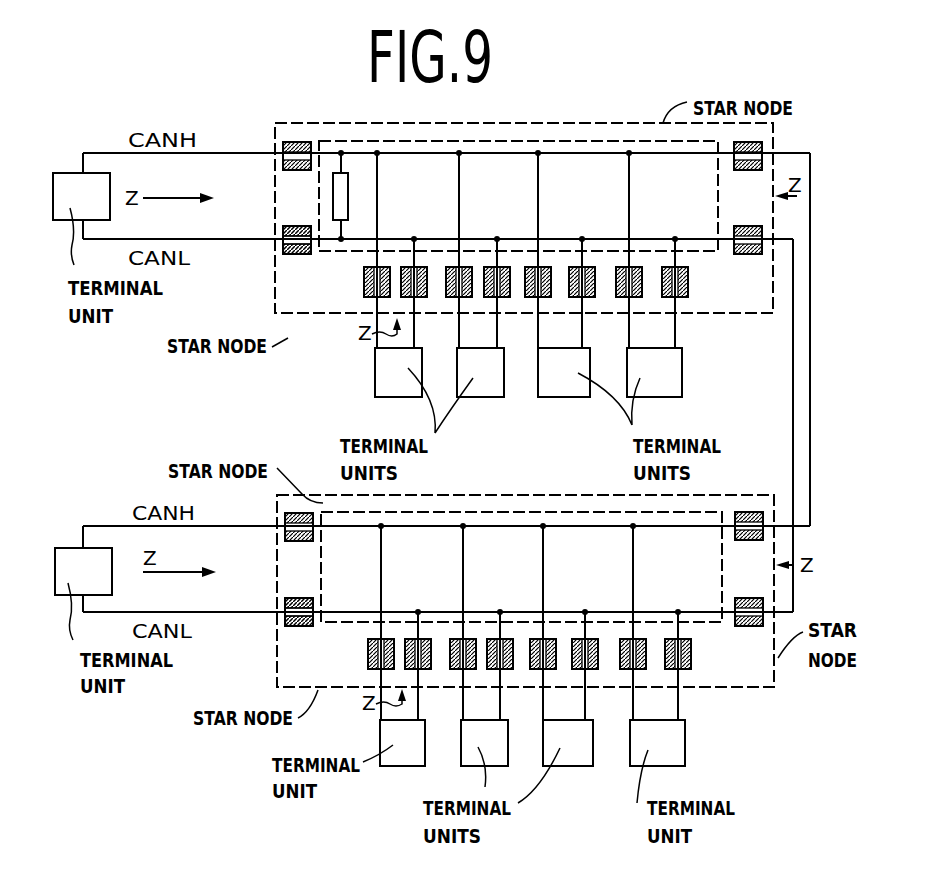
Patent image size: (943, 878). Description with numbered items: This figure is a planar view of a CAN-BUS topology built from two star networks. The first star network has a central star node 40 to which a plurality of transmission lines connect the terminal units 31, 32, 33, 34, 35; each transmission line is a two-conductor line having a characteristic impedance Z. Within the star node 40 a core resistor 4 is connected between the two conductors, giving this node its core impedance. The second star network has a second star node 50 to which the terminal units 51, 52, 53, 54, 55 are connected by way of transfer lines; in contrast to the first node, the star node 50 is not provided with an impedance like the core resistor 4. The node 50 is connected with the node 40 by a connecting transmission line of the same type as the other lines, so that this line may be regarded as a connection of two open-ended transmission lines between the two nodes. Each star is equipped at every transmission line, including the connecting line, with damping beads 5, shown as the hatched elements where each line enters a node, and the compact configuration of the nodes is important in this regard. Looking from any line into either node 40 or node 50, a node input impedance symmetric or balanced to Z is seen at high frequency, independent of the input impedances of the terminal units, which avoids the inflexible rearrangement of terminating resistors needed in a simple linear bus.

The core resistor 4 is at (341, 197).
The damping beads 5 is at (364, 284).
The terminal unit 31 is at (75, 186).
The terminal unit 32 is at (395, 385).
The terminal unit 33 is at (480, 387).
The terminal unit 34 is at (562, 385).
The terminal unit 35 is at (652, 385).
The star node 40 is at (275, 293).
The second star node 50 is at (280, 668).
The terminal unit 51 is at (78, 558).
The terminal unit 52 is at (413, 758).
The terminal unit 53 is at (497, 758).
The terminal unit 54 is at (580, 758).
The terminal unit 55 is at (665, 758).